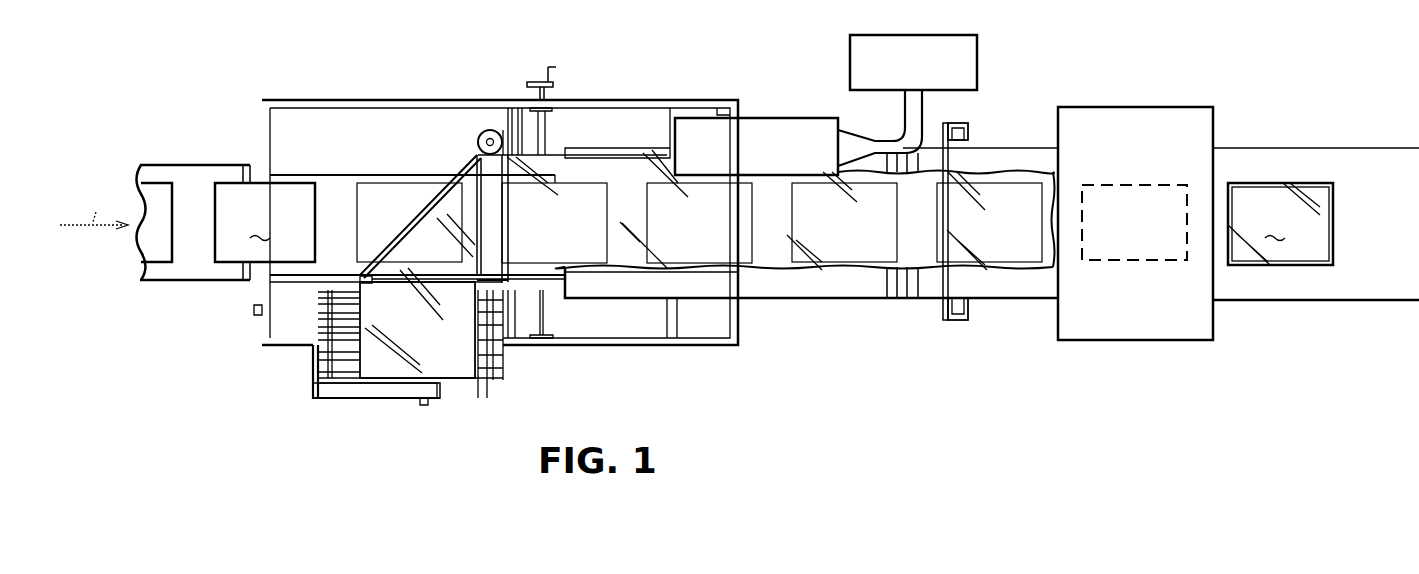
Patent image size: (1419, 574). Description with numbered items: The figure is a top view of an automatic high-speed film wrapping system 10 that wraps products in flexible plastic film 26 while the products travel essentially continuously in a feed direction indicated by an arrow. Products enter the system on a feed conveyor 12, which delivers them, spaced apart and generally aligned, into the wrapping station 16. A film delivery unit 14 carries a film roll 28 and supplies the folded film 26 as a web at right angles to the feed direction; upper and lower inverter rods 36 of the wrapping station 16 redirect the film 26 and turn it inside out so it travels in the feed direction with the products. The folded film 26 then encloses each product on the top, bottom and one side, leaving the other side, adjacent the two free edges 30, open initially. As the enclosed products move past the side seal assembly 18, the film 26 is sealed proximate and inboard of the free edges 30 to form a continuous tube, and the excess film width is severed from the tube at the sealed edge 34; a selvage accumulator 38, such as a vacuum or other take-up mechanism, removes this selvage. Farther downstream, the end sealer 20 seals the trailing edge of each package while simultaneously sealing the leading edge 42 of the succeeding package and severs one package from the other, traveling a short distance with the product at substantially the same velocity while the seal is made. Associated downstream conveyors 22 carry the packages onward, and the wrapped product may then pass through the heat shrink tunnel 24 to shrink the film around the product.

The film wrapping system 10 is at (190, 68).
The feed conveyor 12 is at (330, 174).
The film delivery unit 14 is at (298, 426).
The wrapping station 16 is at (381, 116).
The side seal assembly 18 is at (765, 155).
The end sealer 20 is at (968, 132).
The downstream conveyor 22 is at (915, 298).
The heat shrink tunnel 24 is at (1140, 155).
The film 26 is at (423, 345).
The film roll 28 is at (400, 399).
The free edges 30 is at (556, 155).
The sealed edge 34 is at (1010, 170).
The inverter rods 36 is at (440, 202).
The selvage accumulator 38 is at (920, 73).
The leading edge 42 is at (1058, 217).